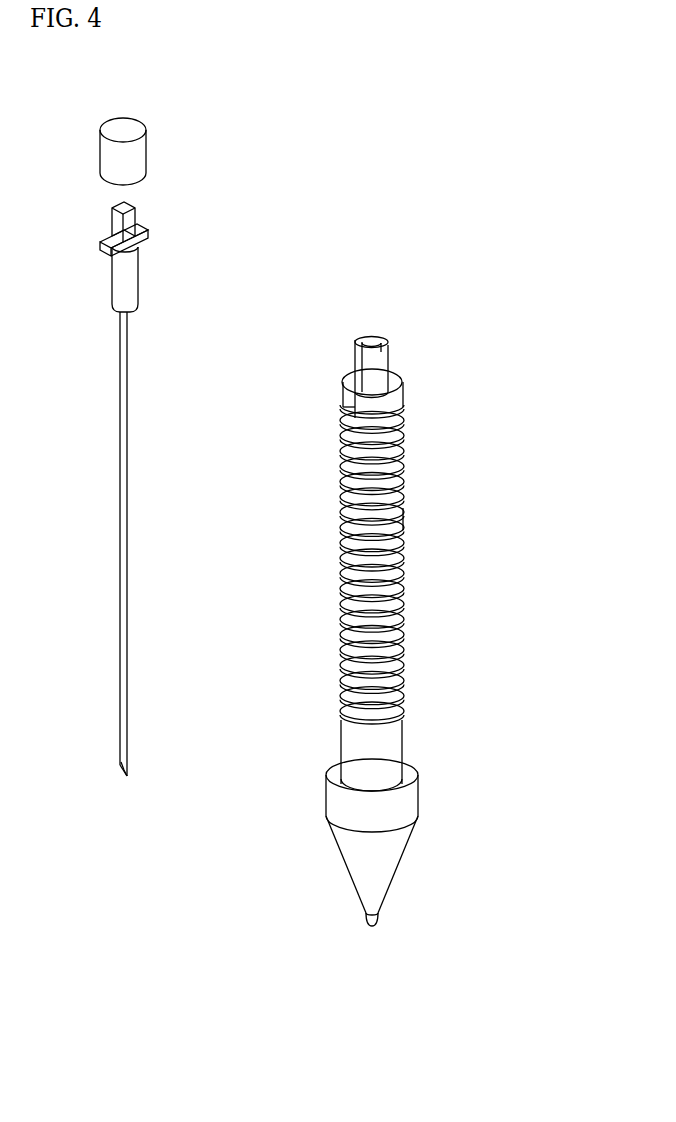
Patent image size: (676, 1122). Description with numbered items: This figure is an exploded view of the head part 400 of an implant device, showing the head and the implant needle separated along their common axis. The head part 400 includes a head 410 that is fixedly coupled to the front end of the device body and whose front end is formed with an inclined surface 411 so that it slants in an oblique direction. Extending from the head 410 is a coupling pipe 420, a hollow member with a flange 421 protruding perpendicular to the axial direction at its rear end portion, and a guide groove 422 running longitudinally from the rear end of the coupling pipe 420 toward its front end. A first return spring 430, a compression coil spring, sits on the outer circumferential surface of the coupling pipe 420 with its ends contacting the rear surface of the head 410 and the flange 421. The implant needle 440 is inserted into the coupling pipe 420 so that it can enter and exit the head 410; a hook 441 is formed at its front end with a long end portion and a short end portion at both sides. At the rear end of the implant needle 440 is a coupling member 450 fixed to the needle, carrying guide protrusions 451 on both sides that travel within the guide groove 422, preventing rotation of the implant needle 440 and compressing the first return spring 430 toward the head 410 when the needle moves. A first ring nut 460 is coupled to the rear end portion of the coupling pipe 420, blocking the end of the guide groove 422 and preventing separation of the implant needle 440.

The head part 400 is at (331, 147).
The head 410 is at (388, 878).
The inclined surface 411 is at (378, 925).
The coupling pipe 420 is at (395, 602).
The flange 421 is at (401, 397).
The guide groove 422 is at (352, 494).
The first return spring 430 is at (403, 514).
The implant needle 440 is at (128, 507).
The hook 441 is at (122, 768).
The coupling member 450 is at (140, 280).
The guide protrusion 451 is at (150, 232).
The first ring nut 460 is at (147, 153).